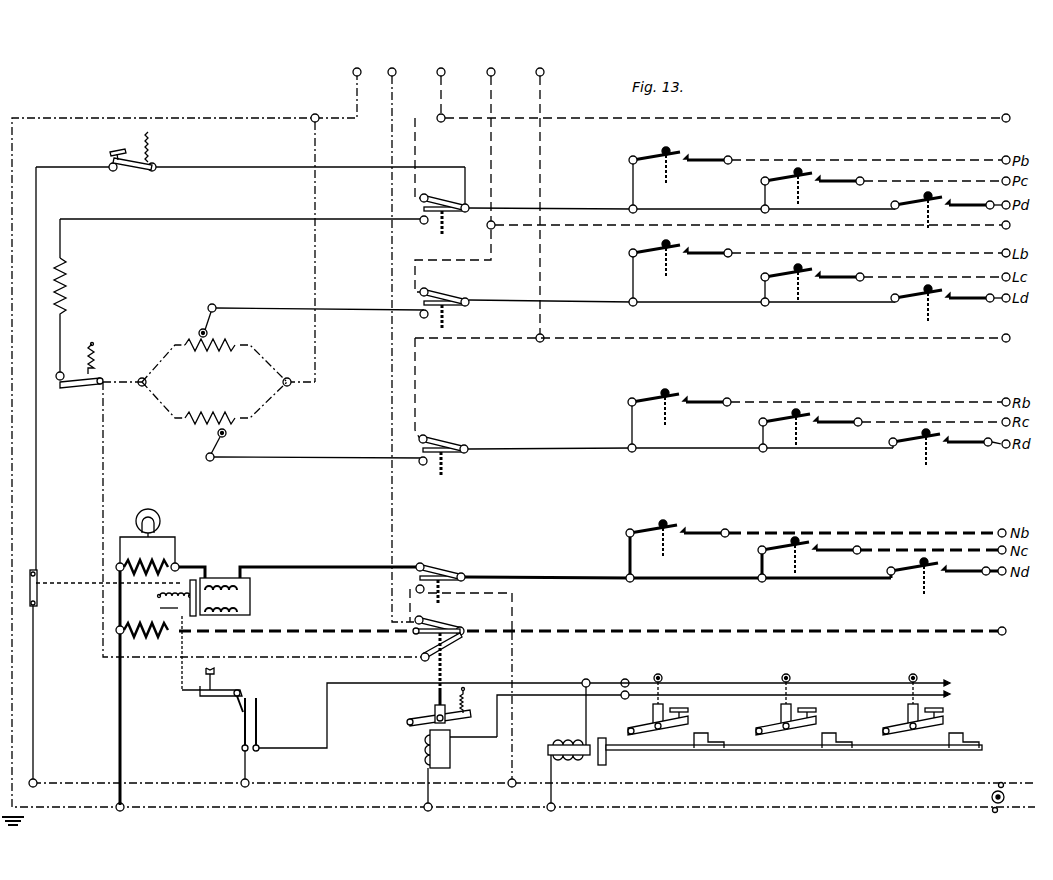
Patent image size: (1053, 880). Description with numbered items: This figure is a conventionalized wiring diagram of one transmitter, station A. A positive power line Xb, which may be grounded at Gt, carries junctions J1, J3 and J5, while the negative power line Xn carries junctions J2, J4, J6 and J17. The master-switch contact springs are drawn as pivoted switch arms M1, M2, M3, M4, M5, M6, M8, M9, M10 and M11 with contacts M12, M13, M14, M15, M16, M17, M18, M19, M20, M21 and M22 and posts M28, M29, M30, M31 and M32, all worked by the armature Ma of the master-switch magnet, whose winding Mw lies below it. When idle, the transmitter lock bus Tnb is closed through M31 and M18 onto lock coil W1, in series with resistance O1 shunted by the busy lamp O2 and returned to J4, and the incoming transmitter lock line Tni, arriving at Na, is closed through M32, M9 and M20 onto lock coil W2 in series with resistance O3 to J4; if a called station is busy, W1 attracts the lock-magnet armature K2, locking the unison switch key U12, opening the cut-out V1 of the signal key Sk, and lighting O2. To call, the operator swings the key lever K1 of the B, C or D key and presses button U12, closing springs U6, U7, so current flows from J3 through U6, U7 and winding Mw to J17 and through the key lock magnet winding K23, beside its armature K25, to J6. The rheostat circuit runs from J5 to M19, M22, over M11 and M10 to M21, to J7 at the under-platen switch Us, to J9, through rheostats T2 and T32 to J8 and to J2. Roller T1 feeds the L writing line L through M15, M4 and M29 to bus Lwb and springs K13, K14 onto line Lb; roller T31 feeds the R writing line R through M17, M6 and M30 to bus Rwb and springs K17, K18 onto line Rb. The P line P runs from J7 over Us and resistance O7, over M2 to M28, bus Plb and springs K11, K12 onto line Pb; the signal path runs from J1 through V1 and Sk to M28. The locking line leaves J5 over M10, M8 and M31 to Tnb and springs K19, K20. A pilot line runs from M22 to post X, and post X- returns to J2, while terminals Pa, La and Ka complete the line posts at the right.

The signal key Sk is at (130, 168).
The negative power line Xn is at (497, 449).
The positive power line Xb is at (779, 773).
The post of the pilot receiver X is at (990, 800).
The junction J1 is at (36, 780).
The junction J2 is at (311, 121).
The junction J3 is at (249, 780).
The junction J4 is at (123, 810).
The junction J5 is at (515, 780).
The junction J6 is at (554, 804).
The junction J7 is at (106, 379).
The junction J8 is at (291, 386).
The junction J9 is at (146, 382).
The junction J17 is at (431, 810).
The resistance O7 is at (239, 295).
The resistance O1 is at (150, 560).
The busy signal lamp O2 is at (160, 515).
The resistance O3 is at (158, 640).
The under platen switch Us is at (76, 388).
The L roller T1 is at (198, 328).
The rheostat T2 is at (210, 353).
The R roller T31 is at (218, 433).
The rheostat T32 is at (210, 406).
The L writing line L is at (320, 300).
The cut-out for the signal circuit V1 is at (38, 598).
The relay coil K2 is at (158, 600).
The transmitter lock coil W1 is at (222, 575).
The transmitter lock coil W2 is at (222, 616).
The unison switch key U12 is at (216, 670).
The unison switch contact spring U6 is at (243, 735).
The unison switch contact spring U7 is at (259, 735).
The negative post of the pilot receiver X- is at (352, 63).
The P line to station B Pb is at (431, 124).
The L line to station B Lb is at (456, 171).
The R line to station B Rb is at (539, 196).
The R writing line R is at (540, 270).
The relay armature M1 is at (446, 186).
The master-switch arm M2 is at (446, 220).
The relay armature M3 is at (445, 292).
The master-switch arm M4 is at (446, 312).
The relay armature M5 is at (446, 440).
The master-switch arm M6 is at (448, 458).
The master-switch arm M8 is at (458, 583).
The master-switch arm M9 is at (452, 640).
The master-switch contact spring M10 is at (446, 638).
The master-switch contact spring M11 is at (446, 620).
The contact M12 is at (418, 200).
The contact M13 is at (422, 224).
The contact M14 is at (418, 294).
The master-switch contact M15 is at (422, 318).
The contact M16 is at (420, 434).
The master-switch contact M17 is at (421, 465).
The master-switch contact M18 is at (428, 552).
The master-switch contact M19 is at (413, 590).
The master-switch contact M20 is at (412, 634).
The master-switch contact M21 is at (421, 660).
The master-switch contact M22 is at (415, 620).
The master-switch post M28 is at (468, 205).
The master-switch post M29 is at (468, 299).
The master-switch post M30 is at (468, 447).
The master-switch post M31 is at (464, 575).
The terminal post M32 is at (463, 628).
The armature of the master-switch magnet Ma is at (425, 708).
The winding of the master-switch electro-magnet Mw is at (428, 762).
The P line P is at (513, 710).
The winding of the key lock magnet K23 is at (566, 740).
The contact block K25 is at (606, 762).
The key lever K1 is at (690, 710).
The B key B is at (676, 724).
The C key C is at (804, 724).
The D key D is at (931, 724).
The terminal Pa is at (737, 119).
The P line bus Plb is at (682, 188).
The key contact spring K11 is at (680, 142).
The key contact spring K12 is at (712, 158).
The terminal La is at (761, 226).
The L writing line bus Lwb is at (682, 290).
The key contact spring K13 is at (640, 250).
The key contact spring K14 is at (712, 251).
The terminal Ka is at (722, 339).
The R writing line bus Rwb is at (680, 438).
The key contact spring K17 is at (640, 398).
The key contact spring K18 is at (710, 400).
The transmitter lock bus Tnb is at (678, 569).
The key contact spring K19 is at (638, 530).
The key contact spring K20 is at (708, 531).
The incoming transmitter lock line Tni is at (590, 622).
The terminal Na is at (1013, 631).
The ground Gt is at (24, 826).